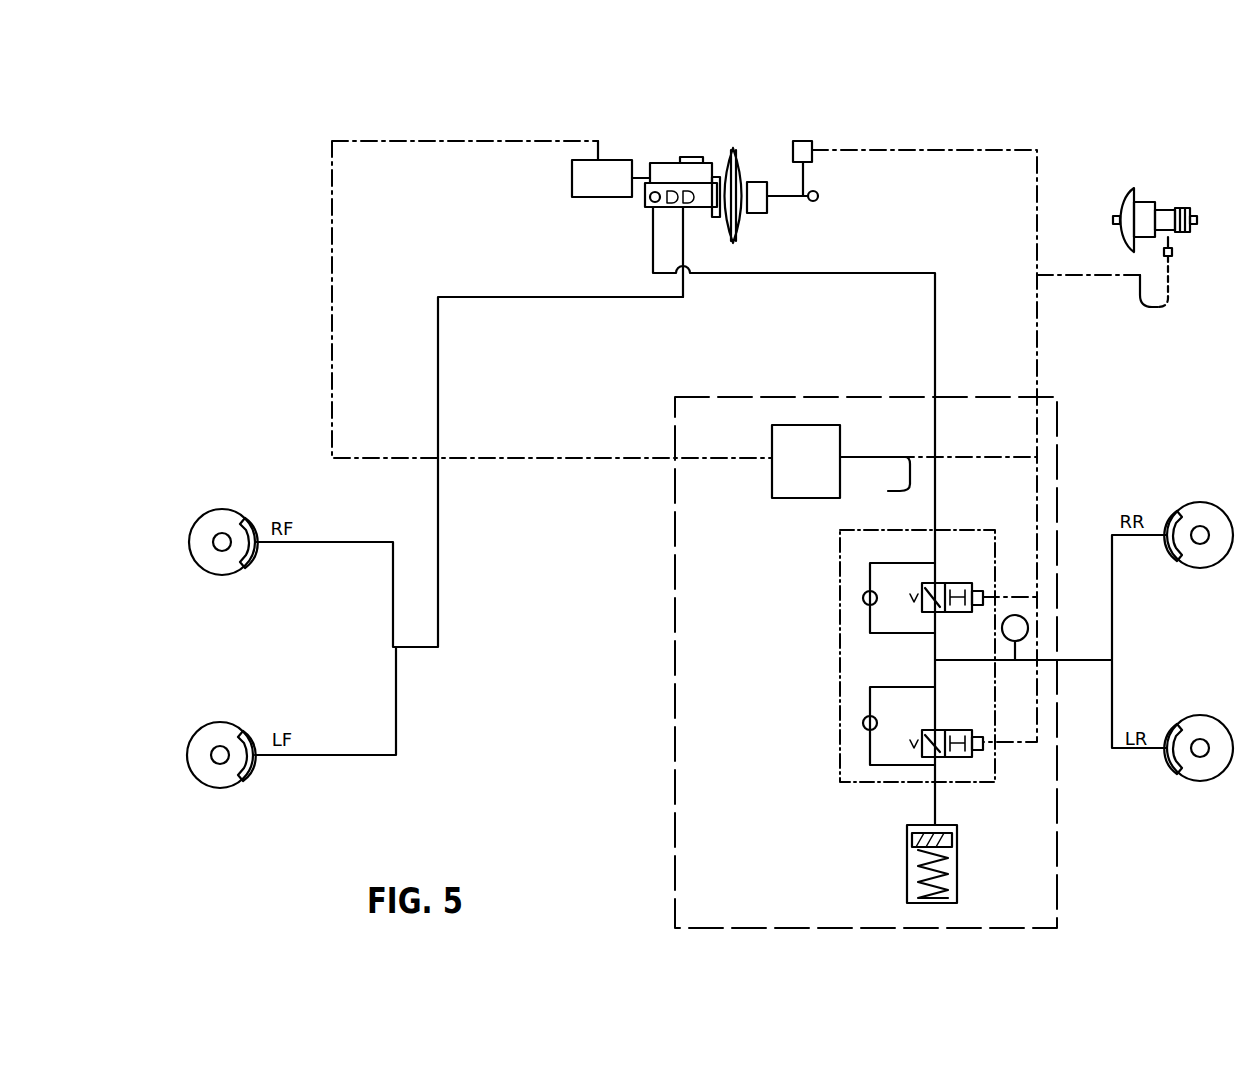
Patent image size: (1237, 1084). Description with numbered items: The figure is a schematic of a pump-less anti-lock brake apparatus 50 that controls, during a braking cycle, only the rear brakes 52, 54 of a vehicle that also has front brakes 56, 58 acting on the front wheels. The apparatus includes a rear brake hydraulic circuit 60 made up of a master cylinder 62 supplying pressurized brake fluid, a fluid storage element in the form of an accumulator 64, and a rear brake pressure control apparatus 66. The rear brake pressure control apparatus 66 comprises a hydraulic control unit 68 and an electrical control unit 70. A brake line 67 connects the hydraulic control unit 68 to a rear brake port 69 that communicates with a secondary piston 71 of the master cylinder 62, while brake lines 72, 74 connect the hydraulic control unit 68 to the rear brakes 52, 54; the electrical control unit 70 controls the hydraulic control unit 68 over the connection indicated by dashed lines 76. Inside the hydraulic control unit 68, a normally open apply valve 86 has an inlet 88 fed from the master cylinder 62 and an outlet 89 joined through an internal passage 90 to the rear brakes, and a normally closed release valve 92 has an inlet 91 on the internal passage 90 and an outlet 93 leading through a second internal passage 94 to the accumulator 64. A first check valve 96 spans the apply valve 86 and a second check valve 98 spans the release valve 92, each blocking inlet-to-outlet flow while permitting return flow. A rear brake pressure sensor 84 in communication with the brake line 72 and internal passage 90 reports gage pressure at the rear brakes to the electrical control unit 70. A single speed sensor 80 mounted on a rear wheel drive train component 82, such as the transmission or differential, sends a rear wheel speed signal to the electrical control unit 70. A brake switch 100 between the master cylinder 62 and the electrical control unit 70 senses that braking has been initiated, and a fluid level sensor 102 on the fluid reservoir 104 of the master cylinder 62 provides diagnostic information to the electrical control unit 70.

The pump-less anti-lock brake apparatus 50 is at (940, 137).
The rear brake 52 is at (1172, 761).
The rear brake 54 is at (1173, 550).
The front brake 56 is at (250, 771).
The front brake 58 is at (249, 517).
The rear brake hydraulic circuit 60 is at (890, 270).
The master cylinder 62 is at (693, 213).
The accumulator 64 is at (907, 858).
The rear brake pressure control apparatus 66 is at (742, 396).
The brake line 67 is at (938, 355).
The hydraulic control unit 68 is at (840, 545).
The rear brake port 69 is at (650, 200).
The electrical control unit 70 is at (772, 477).
The secondary piston 71 is at (648, 246).
The brake line 72 is at (1087, 661).
The brake line 74 is at (438, 565).
The dashed lines 76 is at (875, 482).
The speed sensor 80 is at (1173, 253).
The rear wheel drive train component 82 is at (1143, 202).
The rear brake pressure sensor 84 is at (1028, 628).
The apply valve 86 is at (963, 581).
The inlet 88 is at (933, 585).
The outlet 89 is at (928, 612).
The internal passage 90 is at (933, 648).
The inlet 91 is at (937, 730).
The release valve 92 is at (963, 732).
The outlet 93 is at (933, 758).
The second internal passage 94 is at (935, 760).
The first check valve 96 is at (862, 603).
The second check valve 98 is at (862, 723).
The brake switch 100 is at (801, 141).
The fluid level sensor 102 is at (617, 158).
The fluid reservoir 104 is at (670, 168).